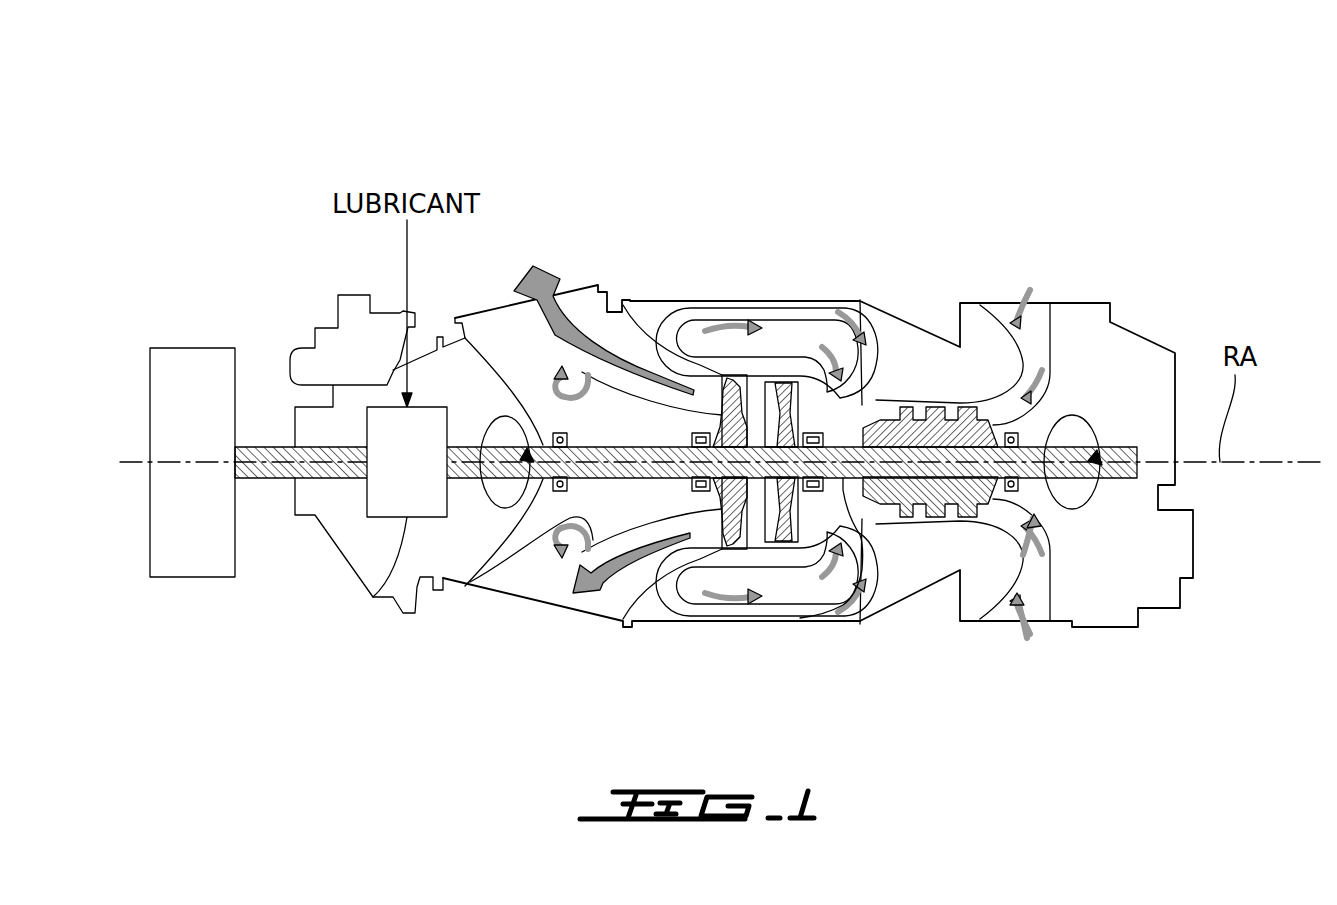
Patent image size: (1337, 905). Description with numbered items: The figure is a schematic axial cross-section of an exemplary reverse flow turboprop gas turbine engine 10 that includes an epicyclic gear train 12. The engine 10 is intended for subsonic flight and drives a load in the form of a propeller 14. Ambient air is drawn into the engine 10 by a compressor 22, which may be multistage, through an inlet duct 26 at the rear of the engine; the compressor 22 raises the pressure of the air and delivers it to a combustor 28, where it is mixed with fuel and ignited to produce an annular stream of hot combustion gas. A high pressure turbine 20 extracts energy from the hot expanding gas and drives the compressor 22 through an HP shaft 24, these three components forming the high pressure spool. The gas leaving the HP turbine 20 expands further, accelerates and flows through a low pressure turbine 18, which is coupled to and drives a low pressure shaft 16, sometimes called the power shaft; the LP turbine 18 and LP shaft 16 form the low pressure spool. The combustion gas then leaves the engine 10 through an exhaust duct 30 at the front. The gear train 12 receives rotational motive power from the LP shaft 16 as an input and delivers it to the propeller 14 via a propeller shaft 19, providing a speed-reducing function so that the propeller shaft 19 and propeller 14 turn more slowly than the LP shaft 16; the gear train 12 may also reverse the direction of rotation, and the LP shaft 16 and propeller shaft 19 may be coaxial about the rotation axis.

The reverse flow turboprop gas turbine engine 10 is at (985, 177).
The epicyclic gear train 12 is at (372, 598).
The propeller 14 is at (192, 345).
The low pressure (LP) shaft 16 is at (545, 447).
The low pressure (LP) turbine 18 is at (727, 375).
The propeller shaft 19 is at (258, 445).
The high pressure (HP) turbine 20 is at (780, 382).
The compressor 22 is at (898, 405).
The high pressure (HP) shaft 24 is at (873, 540).
The inlet duct 26 is at (998, 606).
The combustor 28 is at (783, 597).
The exhaust duct 30 is at (525, 595).